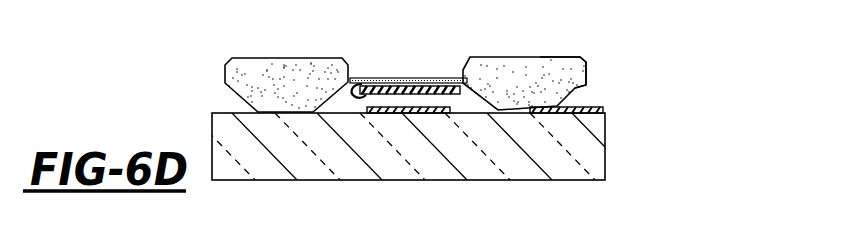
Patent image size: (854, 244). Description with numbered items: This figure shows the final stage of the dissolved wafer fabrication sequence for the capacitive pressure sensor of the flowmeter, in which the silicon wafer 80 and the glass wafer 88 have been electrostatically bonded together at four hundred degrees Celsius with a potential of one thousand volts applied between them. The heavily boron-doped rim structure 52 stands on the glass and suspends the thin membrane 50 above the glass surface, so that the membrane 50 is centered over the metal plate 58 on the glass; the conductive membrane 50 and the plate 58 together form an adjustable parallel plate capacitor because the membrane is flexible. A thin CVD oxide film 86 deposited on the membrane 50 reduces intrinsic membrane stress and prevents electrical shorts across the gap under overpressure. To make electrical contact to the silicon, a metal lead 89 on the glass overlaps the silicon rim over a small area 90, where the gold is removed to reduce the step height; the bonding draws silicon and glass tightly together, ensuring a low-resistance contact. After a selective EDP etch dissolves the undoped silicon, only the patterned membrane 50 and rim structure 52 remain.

The silicon wafer 80 is at (211, 73).
The CVD oxide film 86 is at (357, 82).
The membrane 50 is at (418, 78).
The overlap area 90 is at (545, 105).
The rim structure 52 is at (581, 59).
The metal lead 89 is at (581, 106).
The glass wafer 88 is at (211, 117).
The metal plate 58 is at (440, 113).